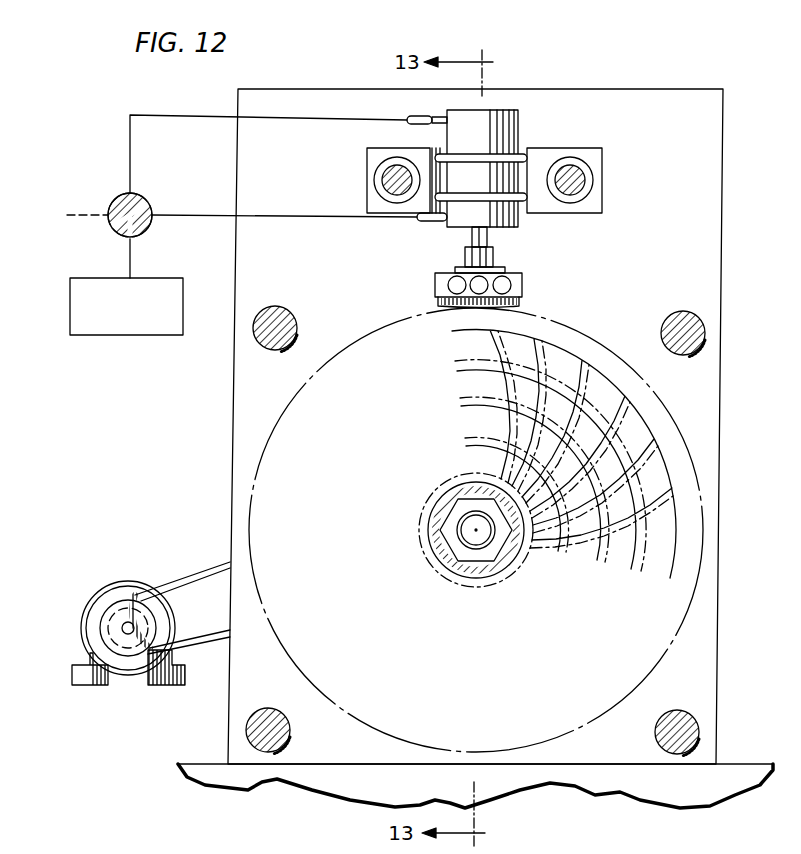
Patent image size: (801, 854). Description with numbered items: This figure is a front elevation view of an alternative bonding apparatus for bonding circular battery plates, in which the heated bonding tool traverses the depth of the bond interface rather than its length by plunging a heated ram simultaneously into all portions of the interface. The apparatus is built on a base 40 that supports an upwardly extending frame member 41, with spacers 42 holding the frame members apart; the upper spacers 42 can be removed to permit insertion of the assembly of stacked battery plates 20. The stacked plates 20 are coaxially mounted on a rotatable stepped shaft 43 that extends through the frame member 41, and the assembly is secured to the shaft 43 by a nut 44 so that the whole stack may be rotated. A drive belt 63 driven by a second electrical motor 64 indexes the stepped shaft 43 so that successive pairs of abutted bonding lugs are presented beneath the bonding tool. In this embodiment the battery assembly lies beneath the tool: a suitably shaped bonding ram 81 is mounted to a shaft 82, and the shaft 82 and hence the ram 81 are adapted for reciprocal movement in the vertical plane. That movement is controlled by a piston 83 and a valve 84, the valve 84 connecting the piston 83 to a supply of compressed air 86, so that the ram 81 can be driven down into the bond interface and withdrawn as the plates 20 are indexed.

The positive battery plates 20 is at (690, 437).
The base 40 is at (740, 766).
The frame member 41 is at (693, 202).
The spacers 42 is at (283, 318).
The stepped shaft 43 is at (472, 538).
The nut 44 is at (447, 528).
The drive belt 63 is at (197, 572).
The second electrical motor 64 is at (113, 583).
The bonding ram 81 is at (518, 283).
The shaft 82 is at (470, 240).
The piston 83 is at (518, 128).
The valve 84 is at (153, 207).
The supply of compressed air 86 is at (142, 336).